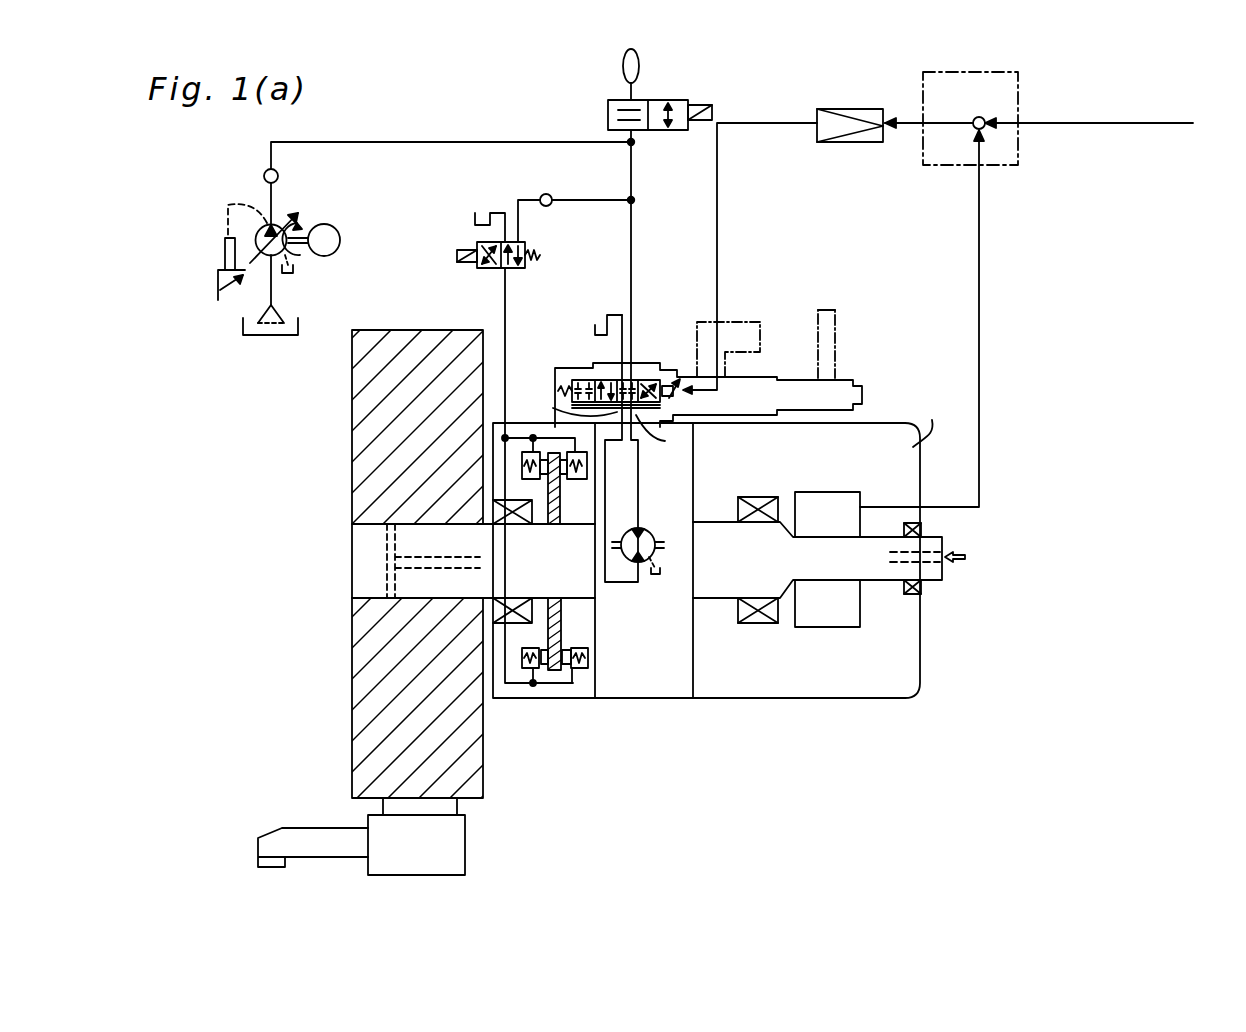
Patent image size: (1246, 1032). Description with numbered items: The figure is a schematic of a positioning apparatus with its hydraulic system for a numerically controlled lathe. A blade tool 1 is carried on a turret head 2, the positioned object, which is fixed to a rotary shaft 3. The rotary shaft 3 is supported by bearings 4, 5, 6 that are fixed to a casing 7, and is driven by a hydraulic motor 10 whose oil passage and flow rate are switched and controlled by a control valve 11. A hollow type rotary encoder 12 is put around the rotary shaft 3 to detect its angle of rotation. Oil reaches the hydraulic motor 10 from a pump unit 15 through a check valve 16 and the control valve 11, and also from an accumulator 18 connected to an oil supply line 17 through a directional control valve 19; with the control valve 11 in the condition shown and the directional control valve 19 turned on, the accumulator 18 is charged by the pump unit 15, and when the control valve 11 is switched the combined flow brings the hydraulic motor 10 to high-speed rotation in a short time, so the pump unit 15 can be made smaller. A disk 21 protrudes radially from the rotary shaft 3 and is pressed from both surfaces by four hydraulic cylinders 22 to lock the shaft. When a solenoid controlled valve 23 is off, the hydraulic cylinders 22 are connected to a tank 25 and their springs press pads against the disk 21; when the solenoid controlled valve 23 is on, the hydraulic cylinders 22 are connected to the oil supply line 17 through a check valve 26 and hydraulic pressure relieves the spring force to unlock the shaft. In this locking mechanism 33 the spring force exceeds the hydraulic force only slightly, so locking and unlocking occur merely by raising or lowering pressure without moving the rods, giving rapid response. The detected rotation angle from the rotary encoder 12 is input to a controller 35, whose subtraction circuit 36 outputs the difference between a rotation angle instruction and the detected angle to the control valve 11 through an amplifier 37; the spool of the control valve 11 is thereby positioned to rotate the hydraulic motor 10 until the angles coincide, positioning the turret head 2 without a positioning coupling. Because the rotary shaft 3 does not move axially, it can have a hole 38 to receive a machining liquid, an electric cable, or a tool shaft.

The blade tool 1 is at (318, 862).
The turret head 2 is at (352, 448).
The rotary shaft 3 is at (352, 575).
The bearing 4 is at (532, 603).
The bearing 5 is at (765, 625).
The bearing 6 is at (910, 597).
The casing 7 is at (855, 690).
The hydraulic motor 10 is at (672, 528).
The control valve 11 is at (658, 366).
The hollow type rotary encoder 12 is at (845, 492).
The pump unit 15 is at (318, 208).
The check valve 16 is at (283, 180).
The oil supply line 17 is at (631, 165).
The accumulator 18 is at (623, 65).
The directional control valve 19 is at (608, 116).
The disk 21 is at (563, 623).
The hydraulic cylinder 22 is at (523, 450).
The solenoid controlled valve 23 is at (489, 270).
The tank 25 is at (474, 222).
The check valve 26 is at (541, 193).
The locking mechanism 33 is at (549, 685).
The controller 35 is at (941, 166).
The subtraction circuit 36 is at (977, 117).
The amplifier 37 is at (851, 109).
The hole 38 is at (925, 560).